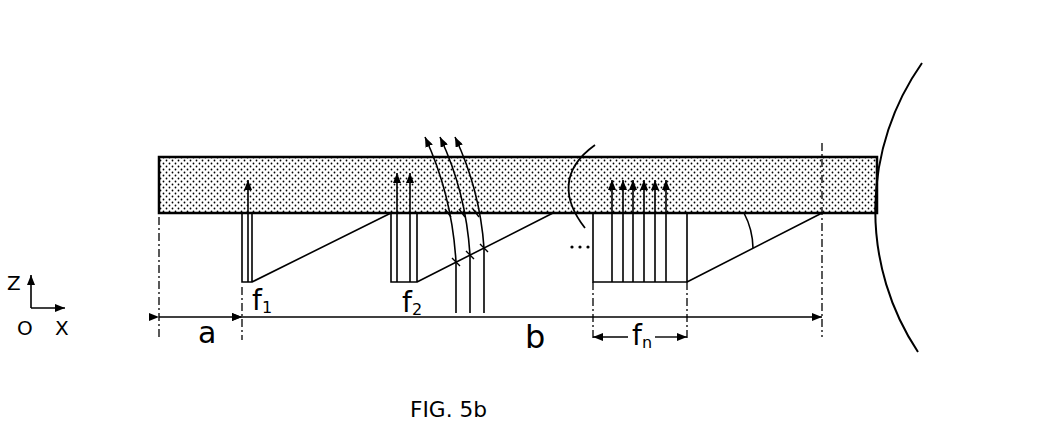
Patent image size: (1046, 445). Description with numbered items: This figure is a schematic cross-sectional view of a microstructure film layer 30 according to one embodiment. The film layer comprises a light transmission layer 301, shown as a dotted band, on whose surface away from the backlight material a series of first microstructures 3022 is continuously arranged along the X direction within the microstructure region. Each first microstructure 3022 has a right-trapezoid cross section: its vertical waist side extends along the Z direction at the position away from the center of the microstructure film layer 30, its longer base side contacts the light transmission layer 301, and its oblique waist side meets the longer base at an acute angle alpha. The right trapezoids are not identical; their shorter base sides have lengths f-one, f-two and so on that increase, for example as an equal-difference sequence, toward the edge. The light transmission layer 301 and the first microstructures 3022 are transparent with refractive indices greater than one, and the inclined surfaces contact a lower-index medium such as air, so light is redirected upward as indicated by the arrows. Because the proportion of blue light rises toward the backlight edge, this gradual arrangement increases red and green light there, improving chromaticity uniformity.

The microstructure film layer 30 is at (118, 108).
The light transmission layer 301 is at (322, 172).
The first microstructures 3022 is at (270, 253).